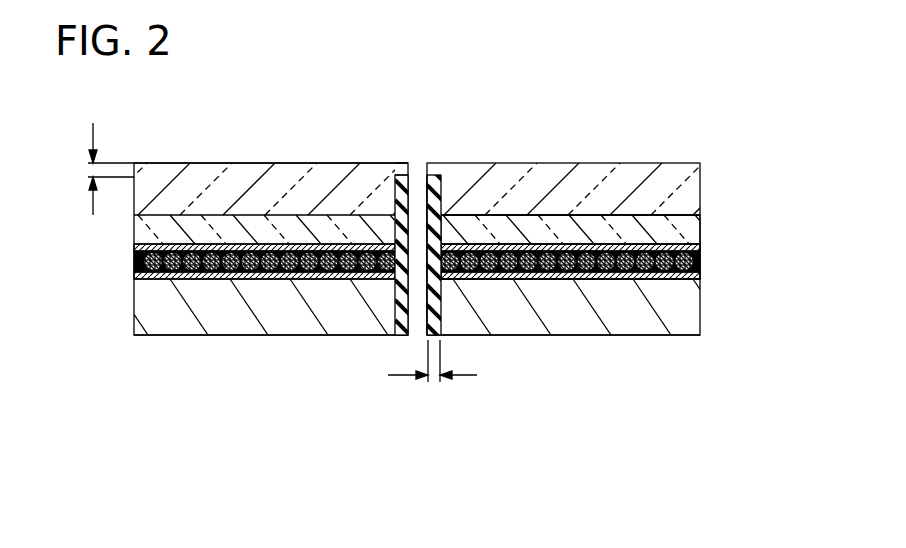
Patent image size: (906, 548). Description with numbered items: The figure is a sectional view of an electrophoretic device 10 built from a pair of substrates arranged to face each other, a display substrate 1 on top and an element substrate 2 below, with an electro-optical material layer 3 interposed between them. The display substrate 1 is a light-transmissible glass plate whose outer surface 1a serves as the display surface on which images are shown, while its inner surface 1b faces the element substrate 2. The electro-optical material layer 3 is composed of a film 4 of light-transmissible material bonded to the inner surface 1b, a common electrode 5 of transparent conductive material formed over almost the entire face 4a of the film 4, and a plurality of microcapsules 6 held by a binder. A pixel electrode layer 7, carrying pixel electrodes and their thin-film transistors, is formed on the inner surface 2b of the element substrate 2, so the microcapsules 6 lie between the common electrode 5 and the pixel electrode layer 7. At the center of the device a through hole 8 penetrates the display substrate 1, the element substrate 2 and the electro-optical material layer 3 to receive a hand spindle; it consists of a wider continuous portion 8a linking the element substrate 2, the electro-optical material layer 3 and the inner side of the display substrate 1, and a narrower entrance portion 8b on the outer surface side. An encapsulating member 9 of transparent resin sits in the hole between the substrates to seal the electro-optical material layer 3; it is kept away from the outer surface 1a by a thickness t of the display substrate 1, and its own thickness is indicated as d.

The electrophoretic device 10 is at (619, 87).
The display substrate 1 is at (687, 192).
The outer surface of the display substrate 1a is at (268, 163).
The inner surface of the display substrate 1b is at (548, 217).
The element substrate 2 is at (684, 308).
The inner surface of the element substrate 2b is at (548, 280).
The electro-optical material layer 3 is at (712, 212).
The film 4 is at (134, 228).
The face of the film 4a is at (622, 247).
The common electrode 5 is at (134, 248).
The microcapsules 6 is at (147, 262).
The pixel electrode layer 7 is at (136, 276).
The through hole 8 is at (424, 149).
The continuous portion 8a is at (434, 205).
The entrance portion 8b is at (416, 166).
The encapsulating member 9 is at (397, 316).
The thickness t is at (92, 170).
The thickness d is at (434, 382).